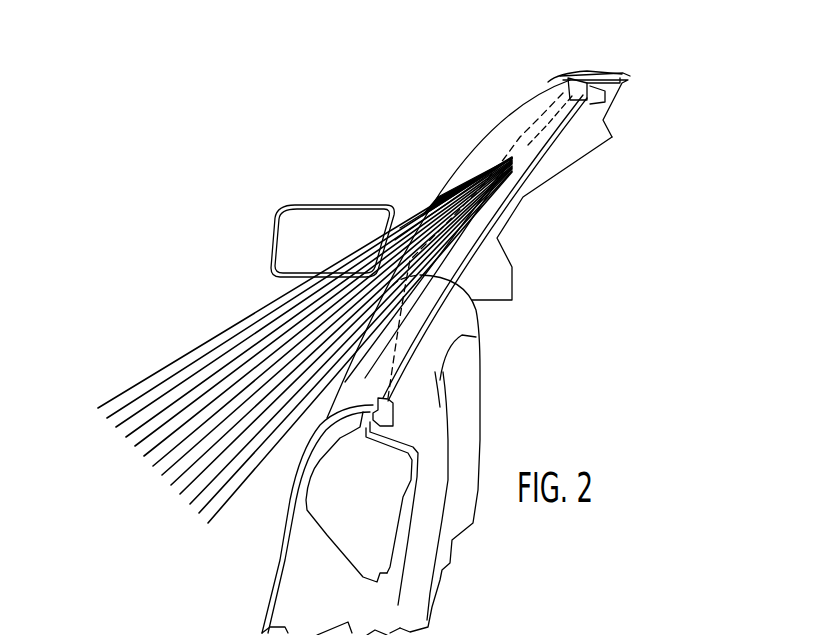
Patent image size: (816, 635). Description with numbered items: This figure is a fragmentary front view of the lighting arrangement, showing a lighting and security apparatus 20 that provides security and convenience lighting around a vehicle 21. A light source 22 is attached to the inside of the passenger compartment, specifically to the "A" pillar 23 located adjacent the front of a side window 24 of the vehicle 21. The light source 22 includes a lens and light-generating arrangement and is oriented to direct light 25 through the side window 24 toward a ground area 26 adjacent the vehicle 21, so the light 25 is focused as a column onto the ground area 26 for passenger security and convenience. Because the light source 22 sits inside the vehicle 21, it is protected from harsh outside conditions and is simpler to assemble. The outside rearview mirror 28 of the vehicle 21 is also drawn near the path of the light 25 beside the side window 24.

The lighting and security apparatus 20 is at (538, 168).
The vehicle 21 is at (625, 77).
The light source 22 is at (518, 138).
The "A" pillar 23 is at (548, 82).
The side window 24 is at (553, 133).
The light 25 is at (430, 202).
The ground area 26 is at (110, 460).
The rear-view mirror 28 is at (279, 218).